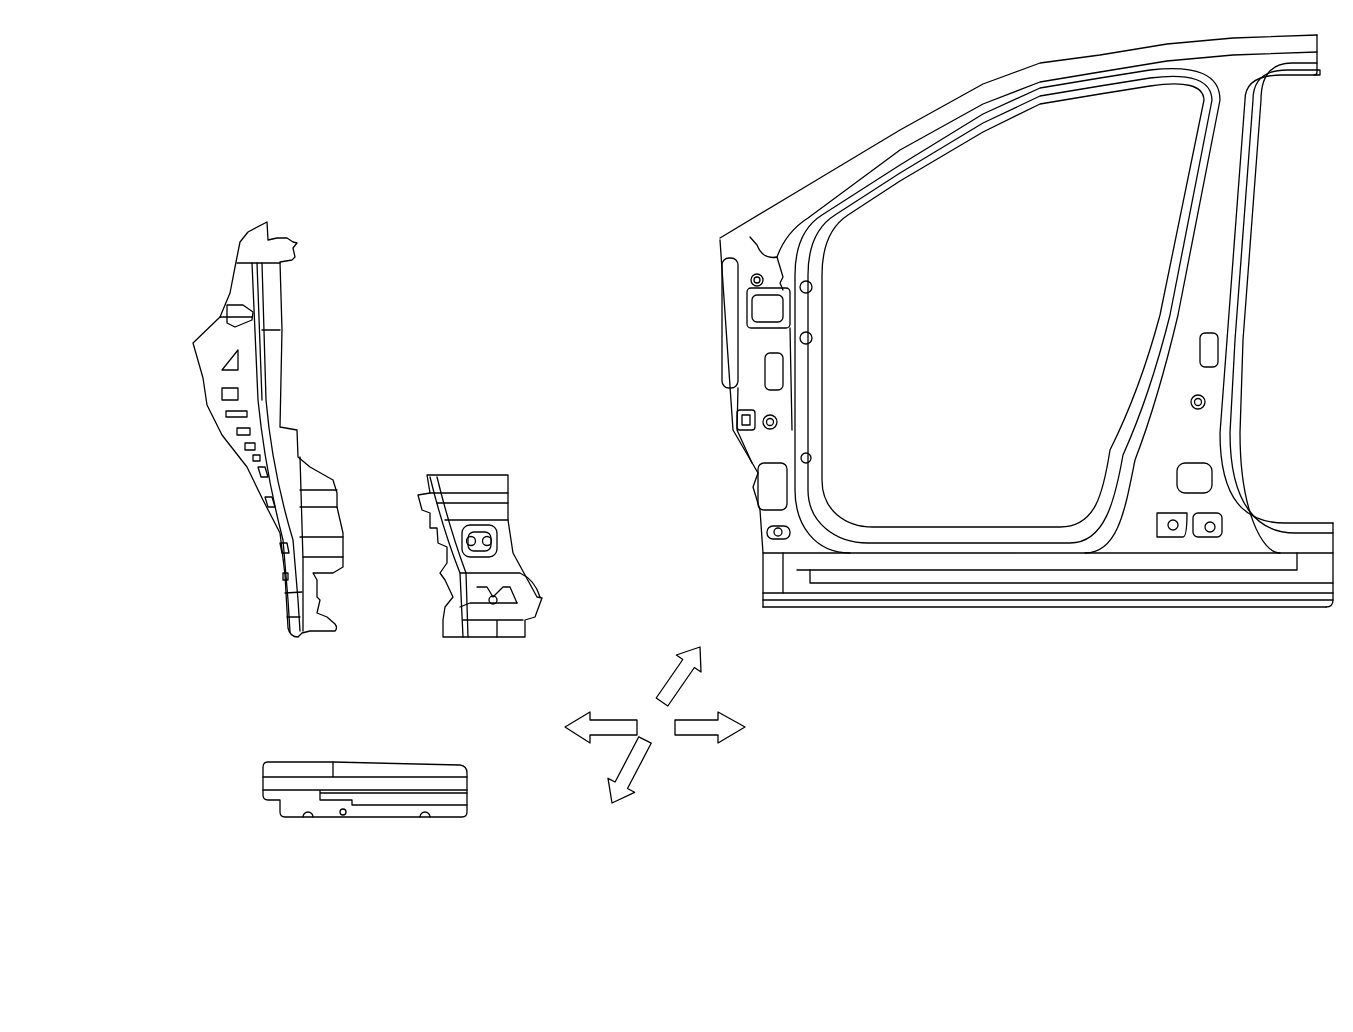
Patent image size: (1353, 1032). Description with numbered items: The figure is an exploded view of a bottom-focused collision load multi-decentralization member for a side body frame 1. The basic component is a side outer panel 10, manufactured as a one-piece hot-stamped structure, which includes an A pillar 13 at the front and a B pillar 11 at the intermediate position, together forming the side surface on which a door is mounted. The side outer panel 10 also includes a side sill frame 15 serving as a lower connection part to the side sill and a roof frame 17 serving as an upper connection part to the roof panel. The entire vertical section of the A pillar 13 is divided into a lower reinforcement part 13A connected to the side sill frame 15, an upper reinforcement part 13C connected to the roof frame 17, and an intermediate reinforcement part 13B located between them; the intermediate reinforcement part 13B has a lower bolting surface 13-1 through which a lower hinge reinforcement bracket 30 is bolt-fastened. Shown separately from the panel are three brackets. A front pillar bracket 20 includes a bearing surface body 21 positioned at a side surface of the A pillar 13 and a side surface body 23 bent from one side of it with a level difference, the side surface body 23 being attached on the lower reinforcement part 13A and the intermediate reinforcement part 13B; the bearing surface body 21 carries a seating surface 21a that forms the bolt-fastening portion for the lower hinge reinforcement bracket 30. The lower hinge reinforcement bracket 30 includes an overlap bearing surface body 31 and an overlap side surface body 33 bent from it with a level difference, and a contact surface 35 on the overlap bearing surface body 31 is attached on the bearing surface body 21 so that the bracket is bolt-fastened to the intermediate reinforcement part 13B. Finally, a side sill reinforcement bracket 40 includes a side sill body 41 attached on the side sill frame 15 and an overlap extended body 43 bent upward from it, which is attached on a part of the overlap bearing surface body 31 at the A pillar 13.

The side body frame 1 is at (202, 62).
The side outer panel 10 is at (785, 158).
The B pillar 11 is at (1185, 256).
The A pillar 13 is at (817, 312).
The lower bolting surface 13-1 is at (783, 480).
The lower reinforcement part 13A is at (753, 553).
The intermediate reinforcement part 13B is at (727, 420).
The upper reinforcement part 13C is at (720, 259).
The side sill frame 15 is at (991, 590).
The roof frame 17 is at (957, 105).
The front pillar bracket 20 is at (205, 262).
The bearing surface body 21 is at (280, 360).
The seating surface 21a is at (332, 523).
The side surface body 23 is at (215, 373).
The lower hinge reinforcement bracket 30 is at (490, 428).
The overlap bearing surface body 31 is at (470, 487).
The overlap side surface body 33 is at (437, 543).
The contact surface 35 is at (485, 530).
The side sill reinforcement bracket 40 is at (233, 742).
The side sill body 41 is at (382, 798).
The overlap extended body 43 is at (290, 770).